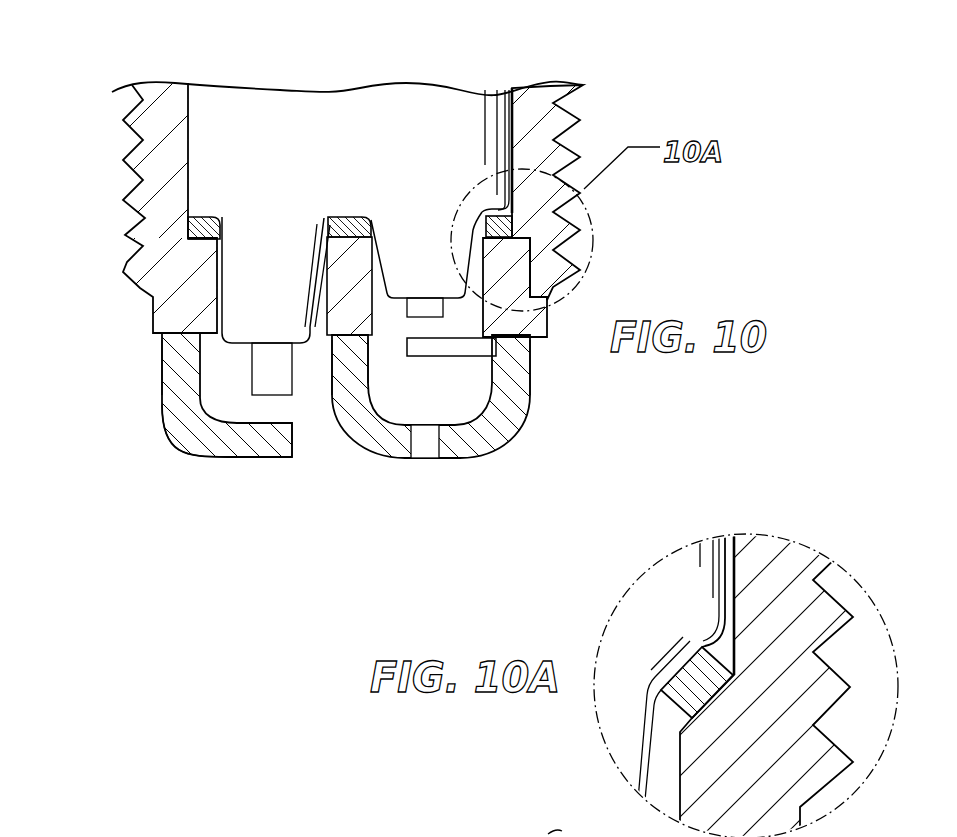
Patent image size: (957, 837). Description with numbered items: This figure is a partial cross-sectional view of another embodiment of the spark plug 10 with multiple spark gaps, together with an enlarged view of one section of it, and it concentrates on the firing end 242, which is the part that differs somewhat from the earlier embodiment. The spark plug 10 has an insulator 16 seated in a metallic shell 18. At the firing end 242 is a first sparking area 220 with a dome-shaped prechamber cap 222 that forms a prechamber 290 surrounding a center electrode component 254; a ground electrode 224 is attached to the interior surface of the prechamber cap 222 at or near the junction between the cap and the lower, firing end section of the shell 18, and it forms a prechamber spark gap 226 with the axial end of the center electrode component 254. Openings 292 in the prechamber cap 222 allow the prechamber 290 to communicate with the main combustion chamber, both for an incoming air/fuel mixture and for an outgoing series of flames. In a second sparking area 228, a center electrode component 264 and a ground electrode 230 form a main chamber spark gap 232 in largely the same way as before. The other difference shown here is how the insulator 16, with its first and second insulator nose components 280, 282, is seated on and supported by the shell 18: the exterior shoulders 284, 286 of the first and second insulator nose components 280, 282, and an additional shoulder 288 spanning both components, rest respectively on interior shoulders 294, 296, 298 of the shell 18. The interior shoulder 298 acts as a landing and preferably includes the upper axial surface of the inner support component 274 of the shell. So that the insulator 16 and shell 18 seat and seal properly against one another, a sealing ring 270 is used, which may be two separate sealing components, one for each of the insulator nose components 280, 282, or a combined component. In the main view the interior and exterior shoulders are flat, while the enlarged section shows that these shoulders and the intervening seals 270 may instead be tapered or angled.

In FIG. 10, the spark plug 10 is at (200, 48).
In FIG. 10A, the spark plug 10 is at (568, 827).
In FIG. 10, the insulator 16 is at (457, 92).
In FIG. 10, the metallic shell 18 is at (543, 110).
In FIG. 10, the first sparking area 220 is at (459, 486).
In FIG. 10, the prechamber cap 222 is at (523, 360).
In FIG. 10, the ground electrode 224 is at (437, 350).
In FIG. 10, the prechamber spark gap 226 is at (384, 342).
In FIG. 10, the second sparking area 228 is at (120, 411).
In FIG. 10, the ground electrode 230 is at (180, 362).
In FIG. 10, the main chamber spark gap 232 is at (287, 411).
In FIG. 10, the firing end 242 is at (149, 494).
In FIG. 10, the center electrode component 254 is at (430, 307).
In FIG. 10, the center electrode component 264 is at (277, 360).
In FIG. 10, the sealing ring 270 is at (207, 217).
In FIG. 10A, the sealing ring 270 is at (733, 675).
In FIG. 10, the inner support component 274 is at (320, 253).
In FIG. 10, the first insulator nose component 280 is at (445, 250).
In FIG. 10, the second insulator nose component 282 is at (237, 273).
In FIG. 10, the exterior shoulder 284 is at (472, 232).
In FIG. 10, the exterior shoulder 286 is at (196, 234).
In FIG. 10, the additional shoulder 288 is at (362, 215).
In FIG. 10, the prechamber 290 is at (404, 395).
In FIG. 10, the openings 292 is at (433, 450).
In FIG. 10, the interior shoulder 294 is at (472, 217).
In FIG. 10, the interior shoulder 296 is at (222, 240).
In FIG. 10, the interior shoulder 298 is at (350, 212).